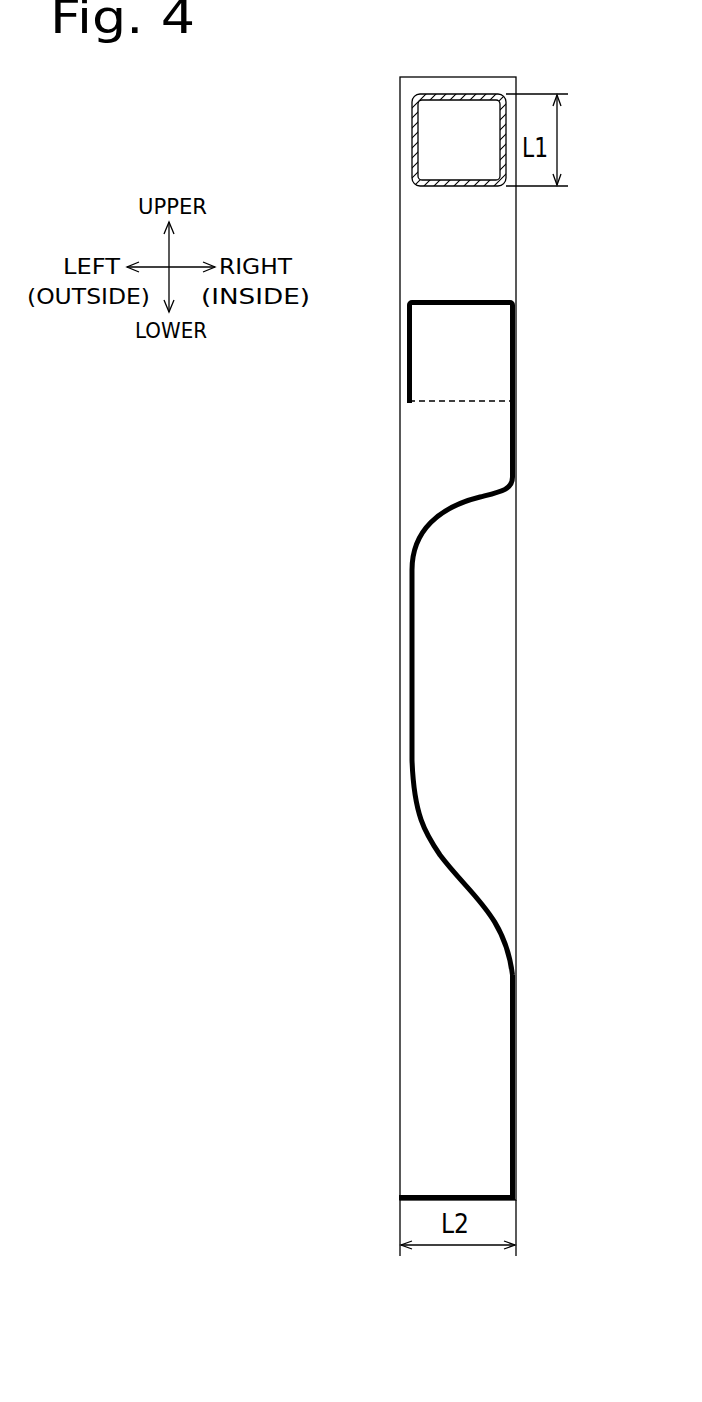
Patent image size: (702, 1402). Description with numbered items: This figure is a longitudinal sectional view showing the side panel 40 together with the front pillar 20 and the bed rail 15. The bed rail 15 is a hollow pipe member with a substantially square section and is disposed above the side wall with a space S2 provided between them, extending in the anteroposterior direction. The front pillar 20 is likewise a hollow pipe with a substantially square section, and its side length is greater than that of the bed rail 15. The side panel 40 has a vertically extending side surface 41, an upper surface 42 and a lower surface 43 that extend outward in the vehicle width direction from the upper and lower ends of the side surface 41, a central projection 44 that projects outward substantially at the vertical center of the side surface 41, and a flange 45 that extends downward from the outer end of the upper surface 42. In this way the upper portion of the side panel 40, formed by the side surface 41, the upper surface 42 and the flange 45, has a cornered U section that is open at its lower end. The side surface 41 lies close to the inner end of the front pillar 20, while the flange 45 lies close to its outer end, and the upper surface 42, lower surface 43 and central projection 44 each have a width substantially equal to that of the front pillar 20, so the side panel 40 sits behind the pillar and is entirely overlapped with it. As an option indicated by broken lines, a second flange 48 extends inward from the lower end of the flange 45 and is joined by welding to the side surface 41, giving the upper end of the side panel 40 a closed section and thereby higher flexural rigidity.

The bed rail 15 is at (463, 95).
The front pillar 20 is at (400, 243).
The space S2 is at (441, 237).
The side panel 40 is at (445, 714).
The side surface 41 is at (512, 444).
The upper surface 42 is at (462, 300).
The lower surface 43 is at (452, 1195).
The central projection 44 is at (438, 850).
The flange 45 is at (407, 355).
The second flange 48 is at (445, 405).